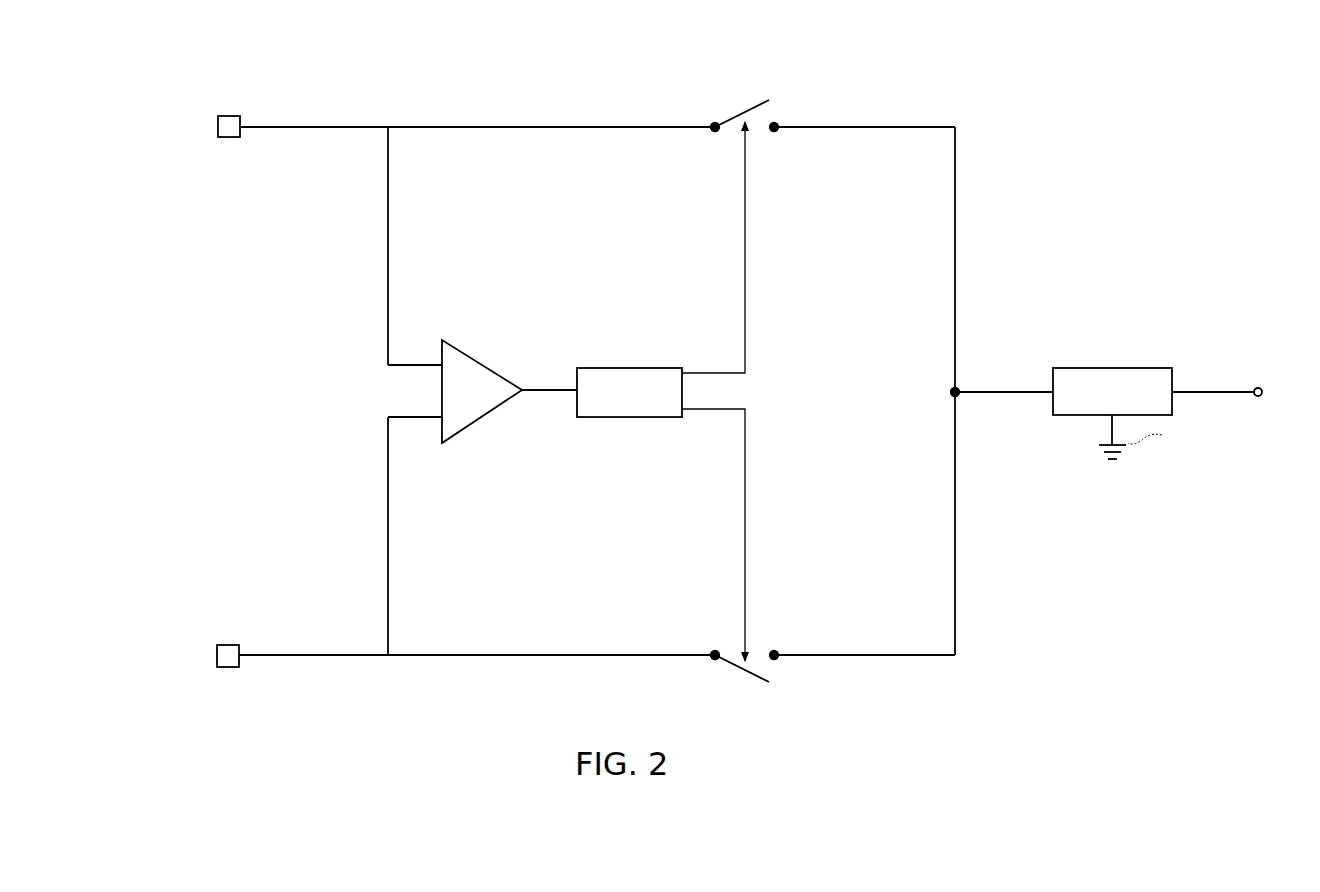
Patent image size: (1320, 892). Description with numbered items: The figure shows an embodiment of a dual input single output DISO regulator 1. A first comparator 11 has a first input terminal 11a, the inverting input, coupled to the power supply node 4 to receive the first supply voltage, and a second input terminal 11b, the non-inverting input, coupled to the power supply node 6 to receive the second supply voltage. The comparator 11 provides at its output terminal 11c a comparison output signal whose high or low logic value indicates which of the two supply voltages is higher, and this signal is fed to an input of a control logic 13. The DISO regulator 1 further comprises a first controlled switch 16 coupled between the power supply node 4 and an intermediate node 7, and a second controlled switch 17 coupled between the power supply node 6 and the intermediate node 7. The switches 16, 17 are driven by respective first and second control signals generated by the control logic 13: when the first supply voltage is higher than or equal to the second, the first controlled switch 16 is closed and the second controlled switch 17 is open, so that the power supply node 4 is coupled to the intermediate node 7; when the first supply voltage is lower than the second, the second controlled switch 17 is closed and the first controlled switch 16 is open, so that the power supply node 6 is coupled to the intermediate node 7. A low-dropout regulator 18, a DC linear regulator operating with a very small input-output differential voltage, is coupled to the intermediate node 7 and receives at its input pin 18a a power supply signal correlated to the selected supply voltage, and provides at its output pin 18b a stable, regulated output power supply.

The DISO regulator 1 is at (190, 74).
The power supply node 4 is at (240, 133).
The power supply node 6 is at (232, 665).
The intermediate node 7 is at (952, 391).
The first comparator 11 is at (482, 372).
The first input terminal 11a is at (439, 360).
The second input terminal 11b is at (439, 423).
The output terminal 11c is at (521, 386).
The control logic 13 is at (668, 407).
The first controlled switch 16 is at (753, 105).
The second controlled switch 17 is at (759, 682).
The low-dropout regulator 18 is at (1072, 378).
The input pin 18a is at (1050, 388).
The output pin 18b is at (1176, 388).